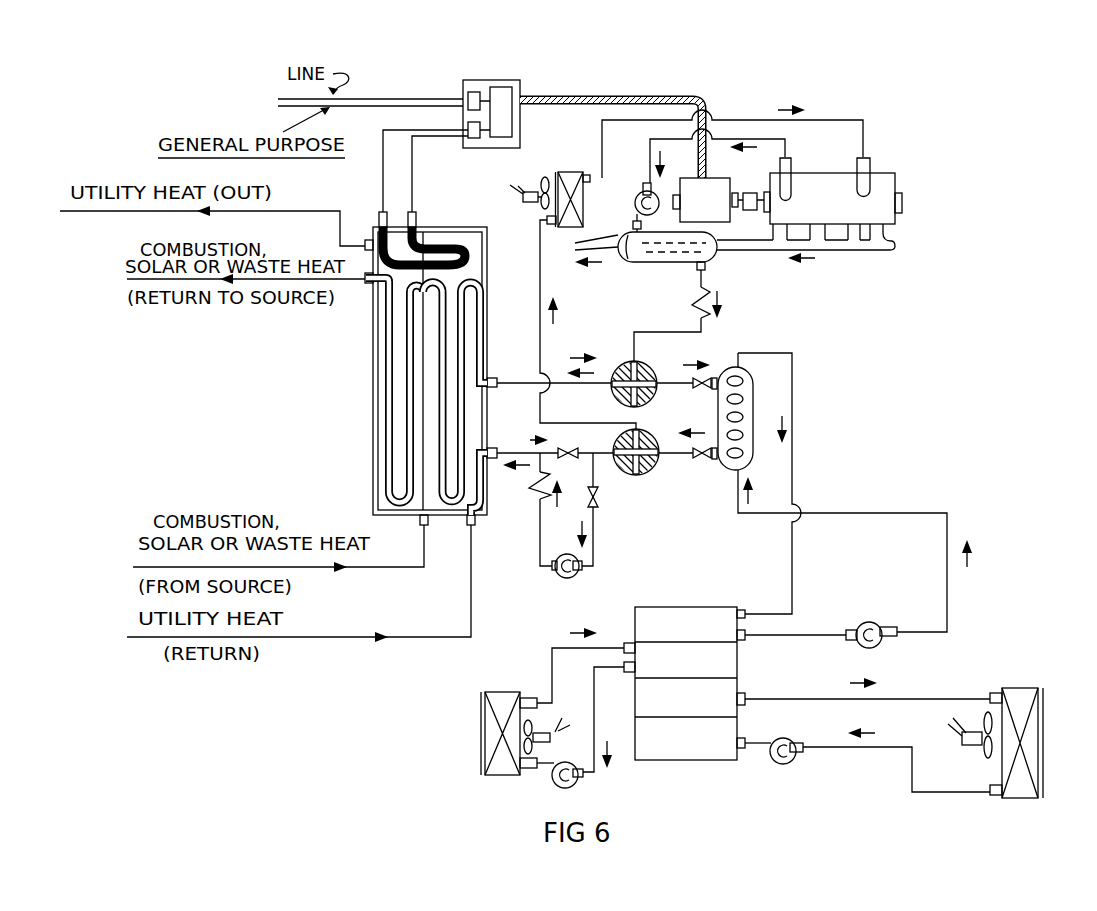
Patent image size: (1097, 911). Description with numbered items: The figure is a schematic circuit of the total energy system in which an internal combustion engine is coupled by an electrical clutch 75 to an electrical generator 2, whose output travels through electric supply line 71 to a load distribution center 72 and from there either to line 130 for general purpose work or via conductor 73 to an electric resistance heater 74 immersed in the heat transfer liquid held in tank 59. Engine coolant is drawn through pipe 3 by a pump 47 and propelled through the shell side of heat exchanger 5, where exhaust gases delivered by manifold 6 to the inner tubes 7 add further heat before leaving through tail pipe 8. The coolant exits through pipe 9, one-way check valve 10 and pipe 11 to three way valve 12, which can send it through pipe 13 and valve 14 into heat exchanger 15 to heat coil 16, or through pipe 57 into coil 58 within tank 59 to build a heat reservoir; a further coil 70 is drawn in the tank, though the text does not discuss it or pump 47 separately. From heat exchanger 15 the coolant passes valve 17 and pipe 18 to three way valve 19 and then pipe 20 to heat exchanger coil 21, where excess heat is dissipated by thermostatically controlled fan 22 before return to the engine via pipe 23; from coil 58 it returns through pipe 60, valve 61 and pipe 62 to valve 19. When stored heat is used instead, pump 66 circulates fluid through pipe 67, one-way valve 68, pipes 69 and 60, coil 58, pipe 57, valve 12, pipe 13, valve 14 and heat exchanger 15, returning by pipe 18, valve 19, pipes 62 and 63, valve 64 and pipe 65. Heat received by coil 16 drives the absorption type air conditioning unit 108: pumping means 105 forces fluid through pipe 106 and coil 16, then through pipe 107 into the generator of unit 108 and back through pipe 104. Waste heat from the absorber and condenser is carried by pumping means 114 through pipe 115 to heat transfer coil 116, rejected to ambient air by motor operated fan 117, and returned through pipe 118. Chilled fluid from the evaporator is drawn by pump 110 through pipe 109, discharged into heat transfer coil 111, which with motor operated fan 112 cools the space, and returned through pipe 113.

The electrical generator 2 is at (715, 178).
The pipe 3 is at (785, 157).
The heat exchanger 5 is at (668, 262).
The manifold 6 is at (848, 248).
The inner tubes 7 is at (637, 250).
The tail pipe 8 is at (588, 244).
The pipe 9 is at (707, 276).
The one way check valve 10 is at (690, 305).
The pipe 11 is at (673, 332).
The three way valve 12 is at (620, 362).
The pipe 13 is at (672, 385).
The valve 14 is at (700, 389).
The heat exchanger 15 is at (732, 367).
The heat exchanger coil 16 is at (747, 393).
The valve 17 is at (703, 456).
The pipe 18 is at (678, 454).
The three way valve 19 is at (645, 477).
The pipe 20 is at (540, 288).
The heat exchanger coil 21 is at (567, 172).
The thermostatically controlled motor-driven fan 22 is at (536, 190).
The pipe 23 is at (643, 122).
The coolant pump 47 is at (643, 193).
The pipe 57 is at (500, 379).
The coil 58 is at (473, 282).
The tank 59 is at (488, 318).
The pipe 60 is at (522, 450).
The valve 61 is at (568, 445).
The pipe 62 is at (593, 452).
The pipe 63 is at (592, 460).
The valve 64 is at (600, 495).
The pipe 65 is at (595, 535).
The pump 66 is at (567, 574).
The pipe 67 is at (540, 545).
The one way valve 68 is at (538, 487).
The pipe 69 is at (540, 463).
The heat exchange coil 70 is at (388, 420).
The electric supply line 71 is at (678, 95).
The load distribution center 72 is at (507, 80).
The conductor 73 is at (412, 205).
The electric resistance heater 74 is at (452, 240).
The electrical clutch 75 is at (755, 210).
The pipe 104 is at (797, 637).
The pumping means 105 is at (872, 620).
The pipe 106 is at (843, 513).
The pipe 107 is at (793, 417).
The absorption type air conditioning unit 108 is at (683, 607).
The pipe 109 is at (595, 720).
The pump 110 is at (555, 783).
The heat transfer coil 111 is at (485, 735).
The motor operated fan 112 is at (550, 742).
The pipe 113 is at (552, 677).
The pumping means 114 is at (782, 766).
The pipe 115 is at (942, 698).
The heat transfer coil 116 is at (1042, 707).
The motor operated fan 117 is at (973, 747).
The pipe 118 is at (895, 747).
The line 130 is at (317, 62).